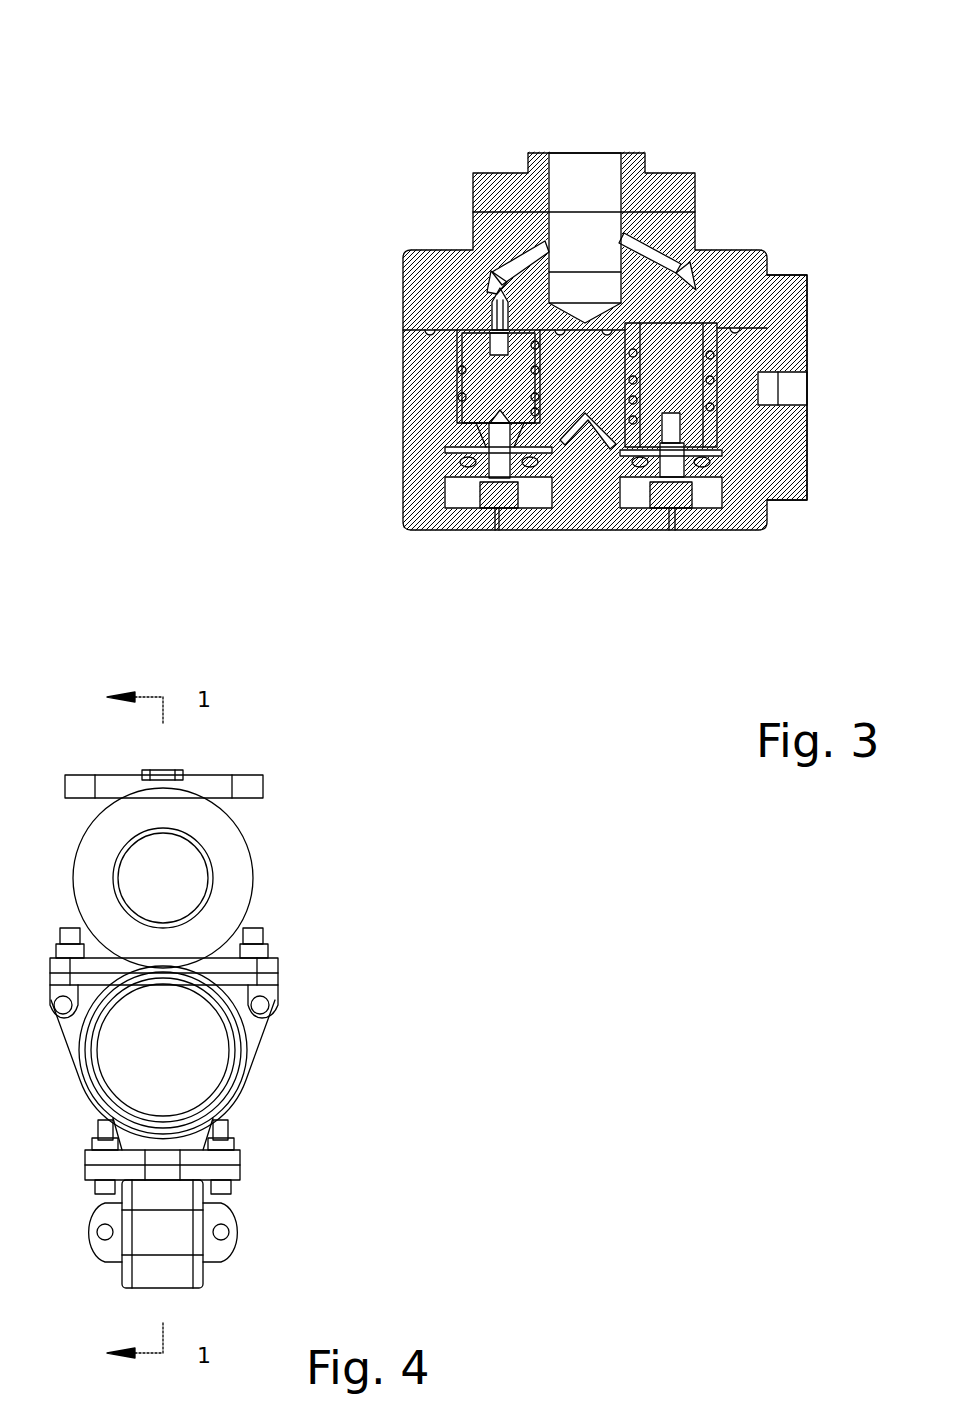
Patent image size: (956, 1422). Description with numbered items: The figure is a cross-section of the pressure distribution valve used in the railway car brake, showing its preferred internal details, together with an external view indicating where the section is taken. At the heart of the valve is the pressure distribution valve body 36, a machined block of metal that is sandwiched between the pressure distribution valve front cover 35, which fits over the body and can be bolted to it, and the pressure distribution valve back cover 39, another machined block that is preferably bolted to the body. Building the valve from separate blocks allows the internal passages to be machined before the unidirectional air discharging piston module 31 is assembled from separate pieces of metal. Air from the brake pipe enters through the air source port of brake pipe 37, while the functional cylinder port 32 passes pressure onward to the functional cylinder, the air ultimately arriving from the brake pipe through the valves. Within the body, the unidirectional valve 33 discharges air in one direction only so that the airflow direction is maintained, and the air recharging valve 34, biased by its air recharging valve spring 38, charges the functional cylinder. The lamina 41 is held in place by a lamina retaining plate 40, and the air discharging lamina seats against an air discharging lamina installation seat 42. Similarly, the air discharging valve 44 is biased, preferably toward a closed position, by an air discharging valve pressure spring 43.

The unidirectional air discharging piston module 31 is at (445, 248).
The functional cylinder port 32 is at (561, 152).
The unidirectional valve 33 is at (487, 322).
The air recharging valve 34 is at (690, 293).
The pressure distribution valve front cover 35 is at (768, 259).
The pressure distribution valve body 36 is at (795, 342).
The air source port of brake pipe 37 is at (808, 388).
The air recharging valve spring 38 is at (718, 363).
The pressure distribution valve back cover 39 is at (770, 533).
The lamina retaining plate 40 is at (472, 470).
The lamina 41 is at (450, 458).
The air discharging lamina installation seat 42 is at (468, 443).
The air discharging valve pressure spring 43 is at (465, 347).
The air discharging valve 44 is at (483, 325).